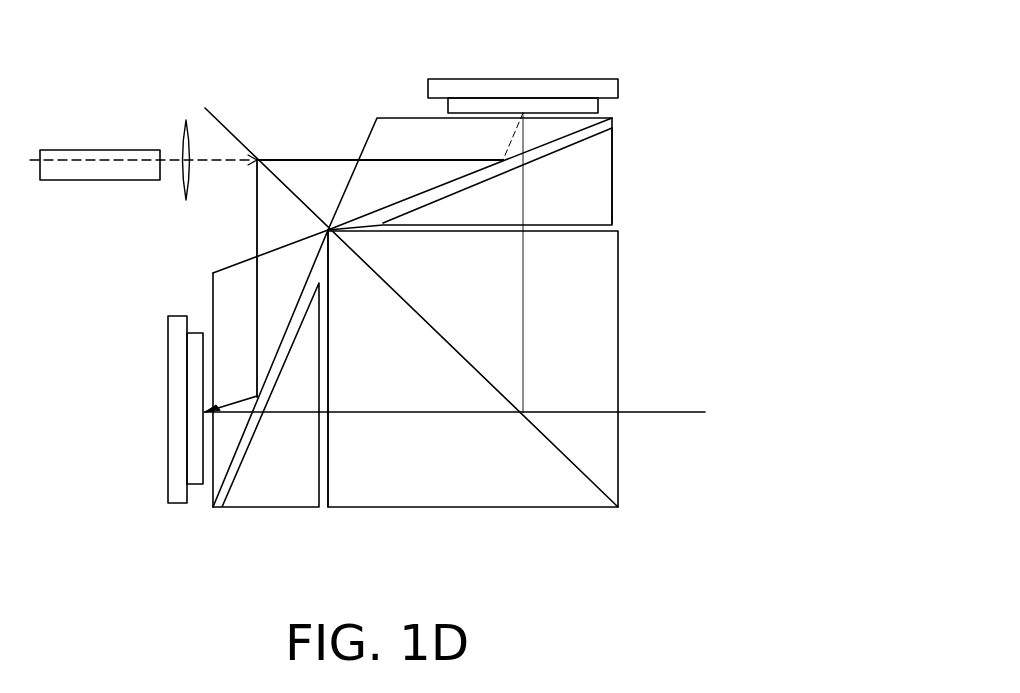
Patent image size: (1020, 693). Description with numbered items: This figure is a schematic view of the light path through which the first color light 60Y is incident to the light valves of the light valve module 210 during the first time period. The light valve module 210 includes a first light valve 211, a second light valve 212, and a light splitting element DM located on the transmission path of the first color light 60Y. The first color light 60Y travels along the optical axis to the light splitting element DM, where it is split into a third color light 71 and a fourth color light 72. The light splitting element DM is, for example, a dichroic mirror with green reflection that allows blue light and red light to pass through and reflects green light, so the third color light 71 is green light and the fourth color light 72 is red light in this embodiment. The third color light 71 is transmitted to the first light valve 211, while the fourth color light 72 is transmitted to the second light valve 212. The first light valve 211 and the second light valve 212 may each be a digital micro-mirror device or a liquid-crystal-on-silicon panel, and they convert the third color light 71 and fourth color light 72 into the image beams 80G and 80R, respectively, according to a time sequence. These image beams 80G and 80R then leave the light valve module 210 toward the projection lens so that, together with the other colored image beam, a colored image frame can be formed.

The first color light 60Y is at (75, 162).
The light splitting element DM is at (228, 128).
The third color light 71 is at (257, 212).
The fourth color light 72 is at (305, 160).
The image beam 80R is at (523, 309).
The image beam 80G is at (453, 412).
The light valve module 210 is at (462, 473).
The first light valve 211 is at (167, 356).
The second light valve 212 is at (603, 78).